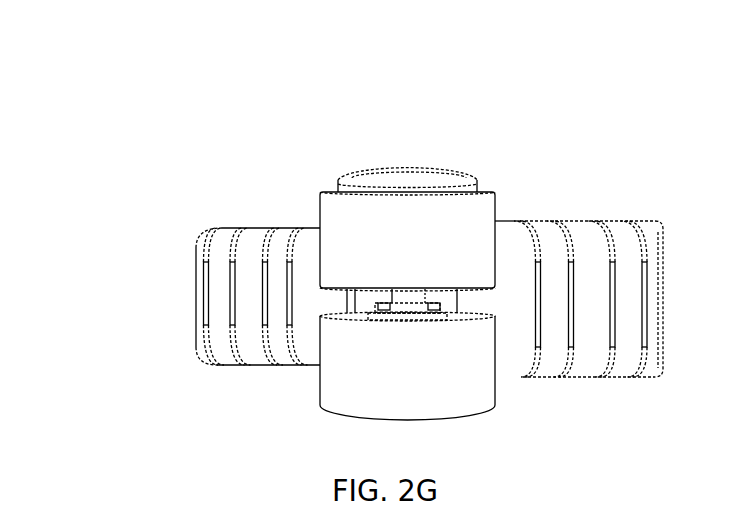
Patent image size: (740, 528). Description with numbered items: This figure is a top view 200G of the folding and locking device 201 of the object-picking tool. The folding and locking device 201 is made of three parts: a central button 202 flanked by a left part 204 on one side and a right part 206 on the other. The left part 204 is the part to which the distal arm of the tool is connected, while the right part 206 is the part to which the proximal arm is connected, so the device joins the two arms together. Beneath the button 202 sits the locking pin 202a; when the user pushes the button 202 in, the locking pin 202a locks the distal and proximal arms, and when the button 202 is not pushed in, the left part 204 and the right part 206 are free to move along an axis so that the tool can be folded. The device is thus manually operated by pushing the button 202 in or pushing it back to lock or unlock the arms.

The top view 200G is at (193, 85).
The folding and locking device 201 is at (637, 222).
The button 202 is at (376, 166).
The locking pin 202a is at (400, 296).
The left part 204 is at (233, 236).
The right part 206 is at (557, 222).